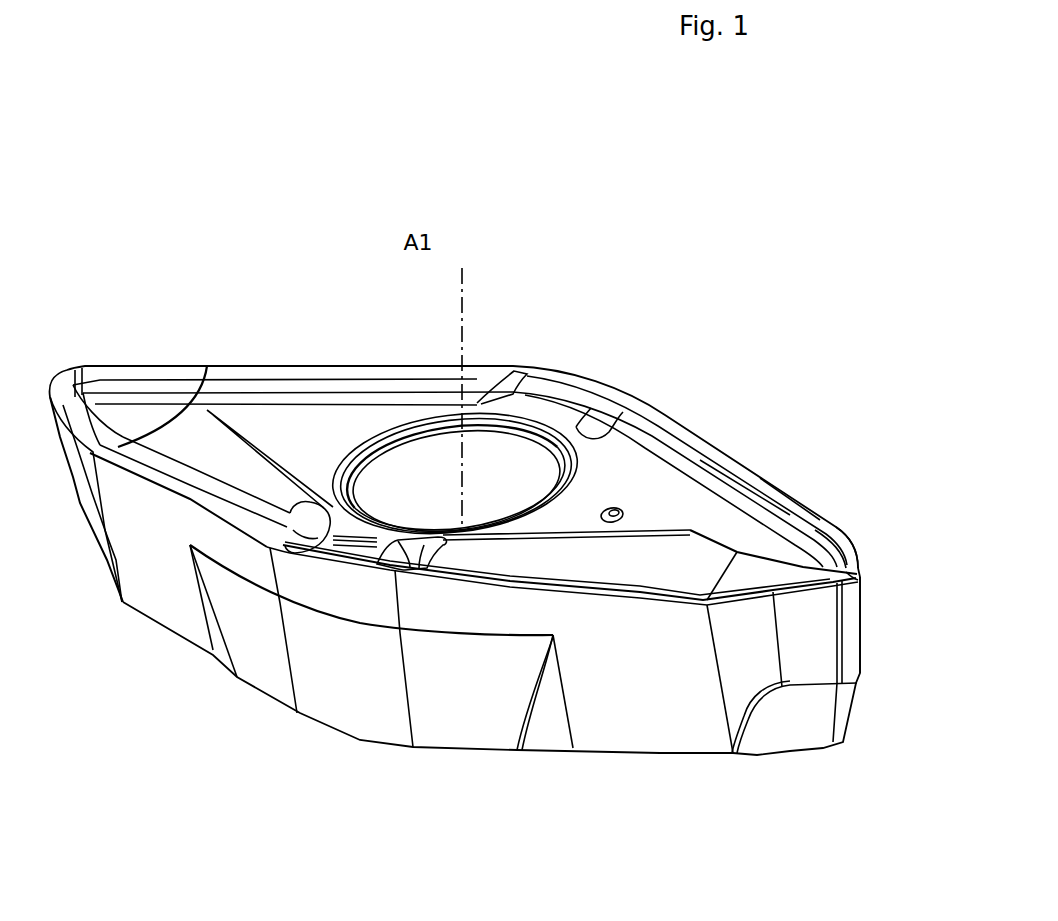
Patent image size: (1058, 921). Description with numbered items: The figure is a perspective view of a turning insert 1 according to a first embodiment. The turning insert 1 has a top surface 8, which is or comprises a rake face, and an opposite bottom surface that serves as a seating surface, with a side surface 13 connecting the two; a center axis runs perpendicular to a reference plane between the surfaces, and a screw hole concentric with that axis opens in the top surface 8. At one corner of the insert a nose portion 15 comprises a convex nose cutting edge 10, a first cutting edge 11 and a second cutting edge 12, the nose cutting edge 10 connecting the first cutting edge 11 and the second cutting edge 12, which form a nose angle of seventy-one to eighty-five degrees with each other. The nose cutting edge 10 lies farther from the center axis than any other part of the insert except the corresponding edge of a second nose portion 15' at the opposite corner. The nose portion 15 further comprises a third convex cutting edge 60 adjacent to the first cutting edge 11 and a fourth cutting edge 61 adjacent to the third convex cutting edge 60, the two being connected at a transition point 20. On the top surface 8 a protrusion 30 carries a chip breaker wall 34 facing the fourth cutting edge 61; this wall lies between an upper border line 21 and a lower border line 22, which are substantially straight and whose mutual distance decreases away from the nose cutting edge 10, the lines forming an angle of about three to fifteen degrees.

The turning insert 1 is at (533, 258).
The top surface 8 is at (573, 482).
The nose cutting edge 10 is at (860, 578).
The first cutting edge 11 is at (857, 557).
The second cutting edge 12 is at (800, 583).
The side surface 13 is at (700, 702).
The nose portion 15 is at (902, 664).
The second nose portion 15' is at (205, 406).
The transition point 20 is at (780, 550).
The upper border line 21 is at (655, 498).
The lower border line 22 is at (728, 512).
The protrusion 30 is at (628, 497).
The chip breaker wall 34 is at (708, 513).
The third convex cutting edge 60 is at (840, 530).
The fourth cutting edge 61 is at (777, 488).